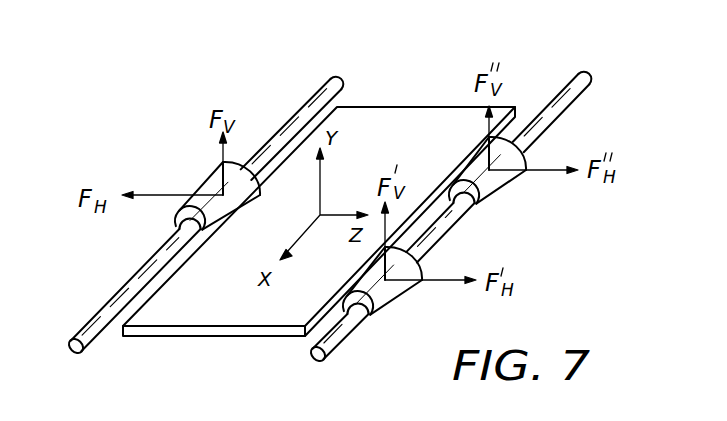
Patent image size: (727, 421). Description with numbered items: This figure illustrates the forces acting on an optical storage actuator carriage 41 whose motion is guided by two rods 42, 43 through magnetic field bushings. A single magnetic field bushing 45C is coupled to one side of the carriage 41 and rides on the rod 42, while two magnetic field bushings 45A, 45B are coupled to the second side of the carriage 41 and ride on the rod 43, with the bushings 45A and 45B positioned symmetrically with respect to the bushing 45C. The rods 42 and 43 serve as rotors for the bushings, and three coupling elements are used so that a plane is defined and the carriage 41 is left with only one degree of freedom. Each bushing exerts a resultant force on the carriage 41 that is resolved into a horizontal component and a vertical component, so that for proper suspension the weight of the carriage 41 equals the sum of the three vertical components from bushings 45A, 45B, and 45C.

The carriage 41 is at (205, 338).
The rod 42 is at (312, 97).
The rod 43 is at (582, 98).
The magnetic field bushing 45A is at (398, 302).
The magnetic field bushing 45B is at (504, 189).
The magnetic field bushing 45C is at (204, 190).